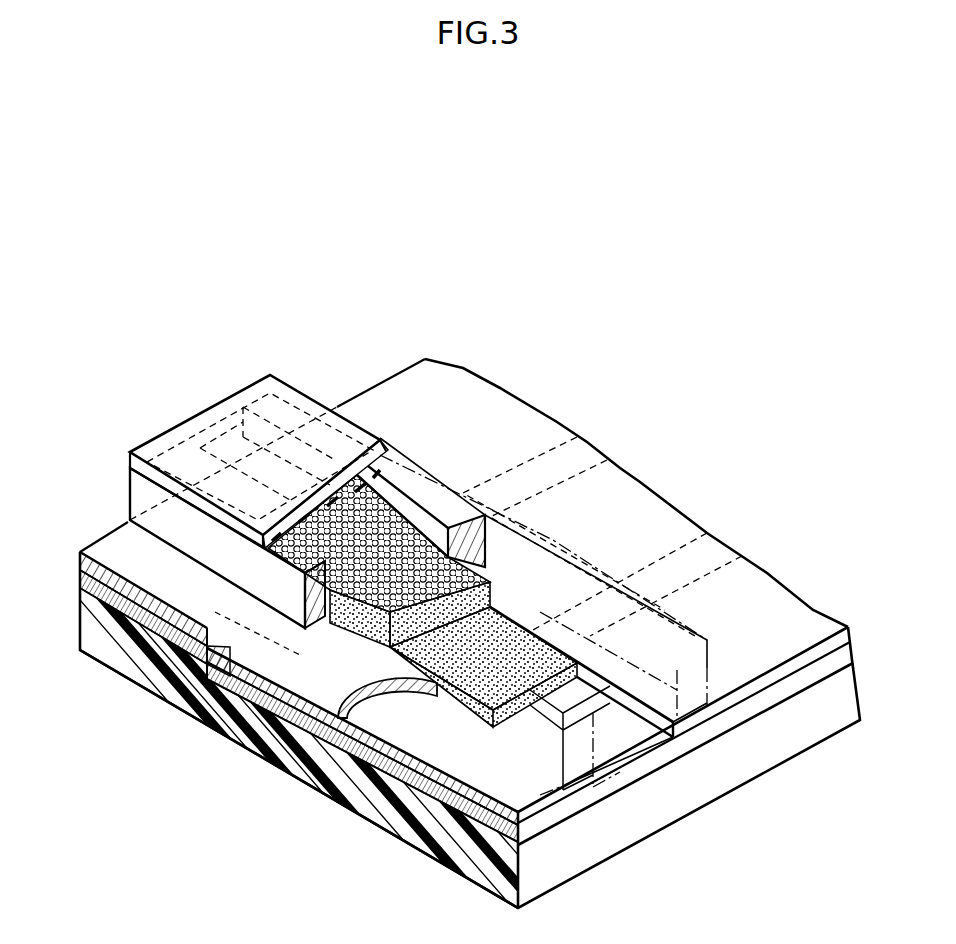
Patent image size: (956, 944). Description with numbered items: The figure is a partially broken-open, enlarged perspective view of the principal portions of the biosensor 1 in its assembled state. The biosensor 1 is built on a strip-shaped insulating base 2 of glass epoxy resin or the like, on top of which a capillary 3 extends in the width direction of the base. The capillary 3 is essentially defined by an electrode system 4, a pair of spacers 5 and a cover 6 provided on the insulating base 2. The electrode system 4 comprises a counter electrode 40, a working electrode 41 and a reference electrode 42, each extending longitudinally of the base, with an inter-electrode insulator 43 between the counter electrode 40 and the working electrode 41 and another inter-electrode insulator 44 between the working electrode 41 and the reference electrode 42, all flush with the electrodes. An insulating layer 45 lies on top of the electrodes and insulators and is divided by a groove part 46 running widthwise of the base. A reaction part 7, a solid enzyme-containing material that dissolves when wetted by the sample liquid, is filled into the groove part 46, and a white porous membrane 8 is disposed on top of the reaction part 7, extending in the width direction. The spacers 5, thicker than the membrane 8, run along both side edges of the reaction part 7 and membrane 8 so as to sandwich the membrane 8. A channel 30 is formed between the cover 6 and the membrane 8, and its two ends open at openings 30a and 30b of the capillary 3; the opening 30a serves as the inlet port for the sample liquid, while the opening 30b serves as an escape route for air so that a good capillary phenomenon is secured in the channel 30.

The biosensor 1 is at (338, 312).
The insulating base 2 is at (727, 772).
The capillary 3 is at (553, 537).
The electrode system 4 is at (148, 773).
The spacers 5 is at (137, 493).
The cover 6 is at (292, 385).
The reaction part 7 is at (467, 717).
The membrane 8 is at (490, 590).
The channel 30 is at (462, 476).
The opening 30a is at (620, 753).
The opening 30b is at (217, 427).
The counter electrode 40 is at (353, 812).
The working electrode 41 is at (267, 723).
The reference electrode 42 is at (177, 643).
The inter-electrode insulator 43 is at (670, 557).
The inter-electrode insulator 44 is at (543, 445).
The insulating layer 45 is at (113, 547).
The groove part 46 is at (663, 723).